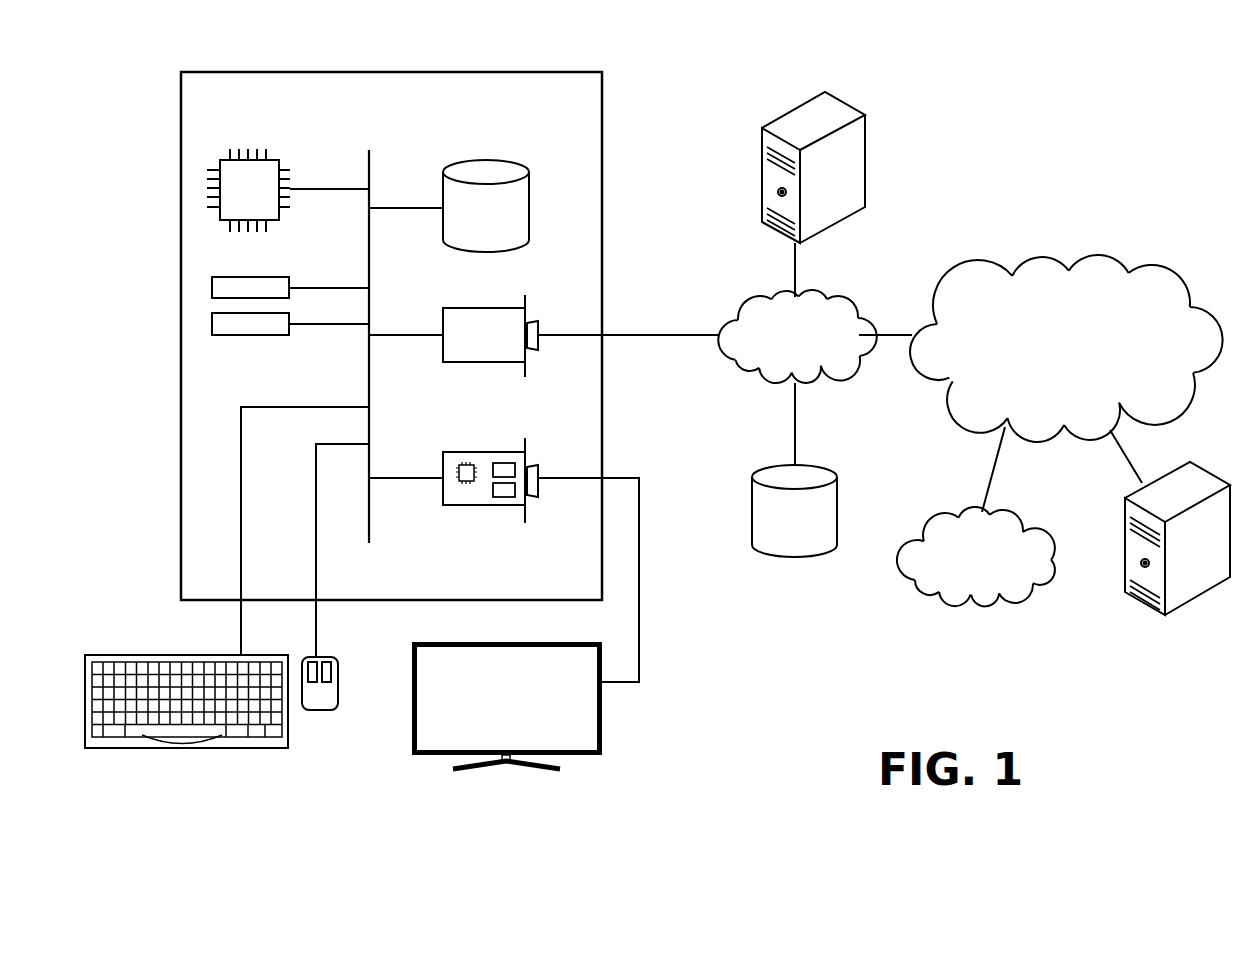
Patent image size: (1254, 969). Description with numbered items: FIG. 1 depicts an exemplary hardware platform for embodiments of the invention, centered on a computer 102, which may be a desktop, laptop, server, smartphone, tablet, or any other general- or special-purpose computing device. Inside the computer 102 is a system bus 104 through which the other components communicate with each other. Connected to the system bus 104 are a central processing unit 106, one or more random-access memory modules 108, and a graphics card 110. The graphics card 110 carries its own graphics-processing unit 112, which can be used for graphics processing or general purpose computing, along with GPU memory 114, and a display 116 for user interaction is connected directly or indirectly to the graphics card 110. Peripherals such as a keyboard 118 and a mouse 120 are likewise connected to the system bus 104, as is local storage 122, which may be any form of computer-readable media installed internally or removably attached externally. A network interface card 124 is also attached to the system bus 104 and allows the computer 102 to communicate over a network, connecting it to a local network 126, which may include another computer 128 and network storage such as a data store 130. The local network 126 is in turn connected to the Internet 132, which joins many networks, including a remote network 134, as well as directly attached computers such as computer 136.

The computer 102 is at (555, 72).
The system bus 104 is at (373, 160).
The central processing unit 106 is at (273, 157).
The random-access memory modules 108 is at (290, 283).
The graphics card 110 is at (504, 543).
The graphics-processing unit 112 is at (465, 485).
The GPU memory 114 is at (502, 497).
The display 116 is at (602, 735).
The keyboard 118 is at (190, 748).
The mouse 120 is at (315, 710).
The local storage 122 is at (530, 192).
The network interface card 124 is at (440, 318).
The local network 126 is at (847, 290).
The computer 128 is at (850, 100).
The data store 130 is at (827, 468).
The Internet 132 is at (1112, 252).
The remote network 134 is at (1033, 509).
The computer 136 is at (1207, 467).